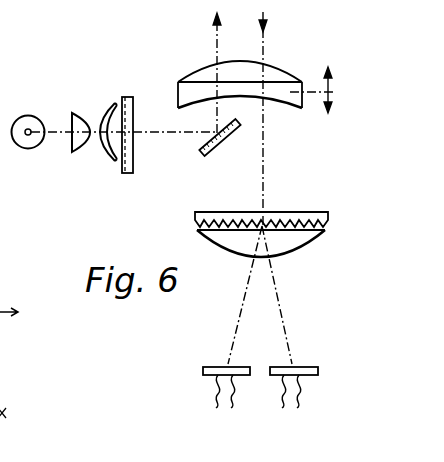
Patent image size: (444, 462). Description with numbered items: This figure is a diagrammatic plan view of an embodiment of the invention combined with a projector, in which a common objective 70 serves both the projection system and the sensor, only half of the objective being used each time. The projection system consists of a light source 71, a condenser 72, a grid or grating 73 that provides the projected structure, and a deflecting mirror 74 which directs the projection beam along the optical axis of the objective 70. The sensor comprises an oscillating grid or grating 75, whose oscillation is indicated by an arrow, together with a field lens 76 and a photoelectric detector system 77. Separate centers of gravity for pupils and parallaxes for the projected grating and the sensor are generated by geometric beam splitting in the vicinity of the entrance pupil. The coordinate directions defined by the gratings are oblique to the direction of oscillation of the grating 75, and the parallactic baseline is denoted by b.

The common objective 70 is at (280, 76).
The light source 71 is at (24, 121).
The condenser 72 is at (103, 141).
The grid or grating 73 is at (128, 97).
The deflecting mirror 74 is at (217, 155).
The oscillating grid or grating 75 is at (308, 216).
The field lens 76 is at (295, 243).
The photoelectric detector system 77 is at (247, 376).